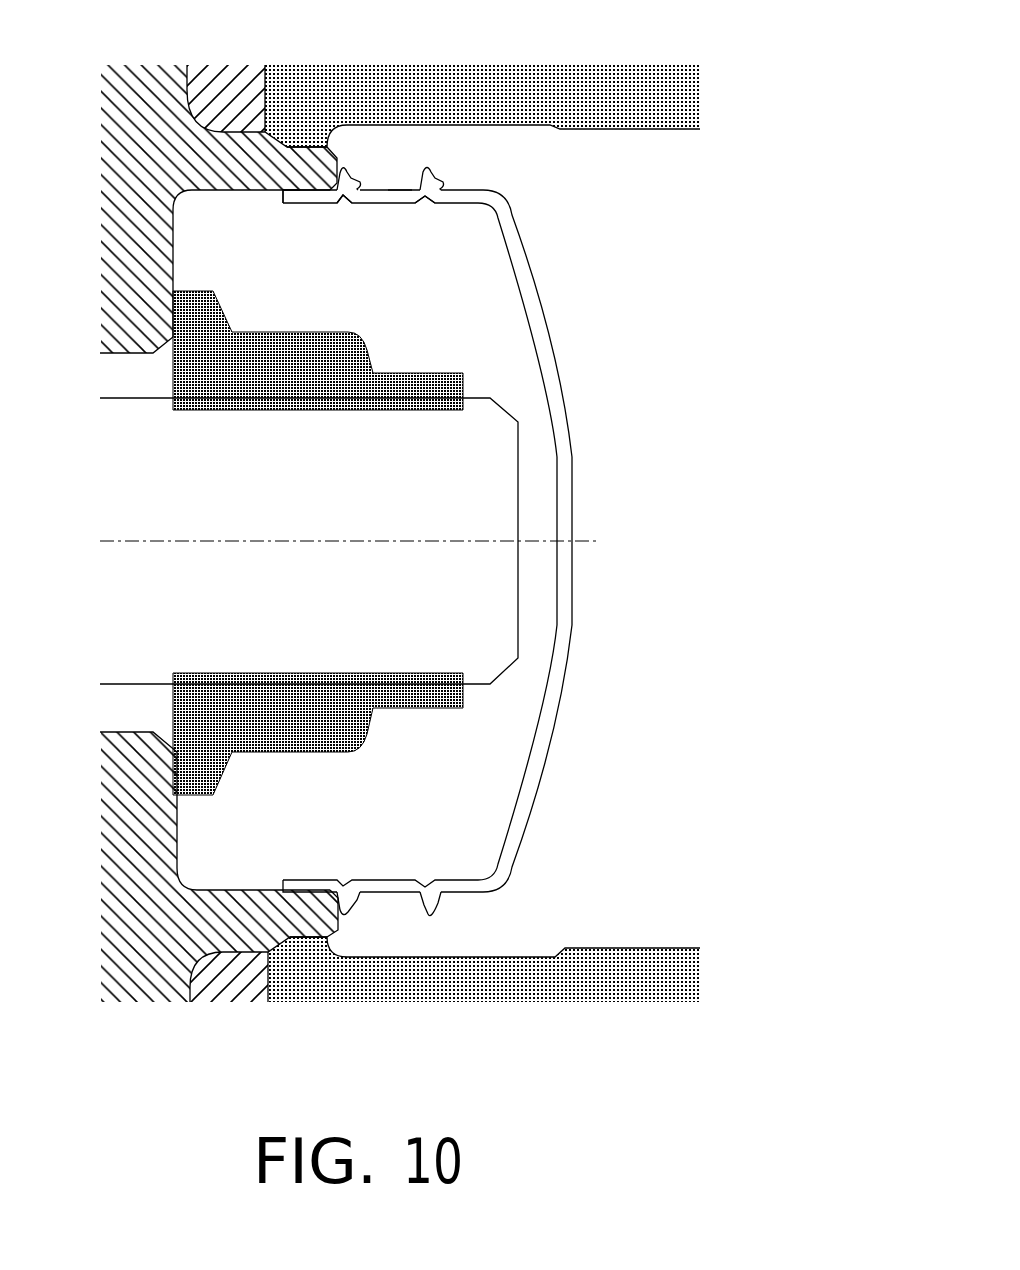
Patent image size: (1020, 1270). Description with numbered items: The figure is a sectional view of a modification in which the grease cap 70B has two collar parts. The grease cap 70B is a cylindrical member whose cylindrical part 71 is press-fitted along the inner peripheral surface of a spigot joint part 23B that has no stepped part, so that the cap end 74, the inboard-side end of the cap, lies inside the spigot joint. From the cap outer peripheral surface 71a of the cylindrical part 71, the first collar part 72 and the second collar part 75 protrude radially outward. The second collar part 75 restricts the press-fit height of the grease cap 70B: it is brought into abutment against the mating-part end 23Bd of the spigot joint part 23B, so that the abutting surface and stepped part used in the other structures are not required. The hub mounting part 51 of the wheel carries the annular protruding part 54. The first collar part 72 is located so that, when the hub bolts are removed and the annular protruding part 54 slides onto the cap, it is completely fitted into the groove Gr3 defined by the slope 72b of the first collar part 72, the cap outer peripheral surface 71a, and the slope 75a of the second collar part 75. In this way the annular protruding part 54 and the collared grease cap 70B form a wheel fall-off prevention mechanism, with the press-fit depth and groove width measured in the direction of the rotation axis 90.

The spigot joint part 23B is at (216, 534).
The mating-part end 23Bd is at (338, 165).
The hub mounting part 51 is at (433, 80).
The annular protruding part 54 is at (304, 137).
The grease cap 70B is at (442, 535).
The cylindrical part 71 is at (378, 203).
The cap outer peripheral surface 71a is at (398, 191).
The first collar part 72 is at (433, 170).
The slope 72b is at (424, 200).
The cap end 74 is at (281, 206).
The second collar part 75 is at (357, 182).
The slope 75a is at (348, 199).
The groove Gr3 is at (404, 535).
The rotation axis 90 is at (166, 543).